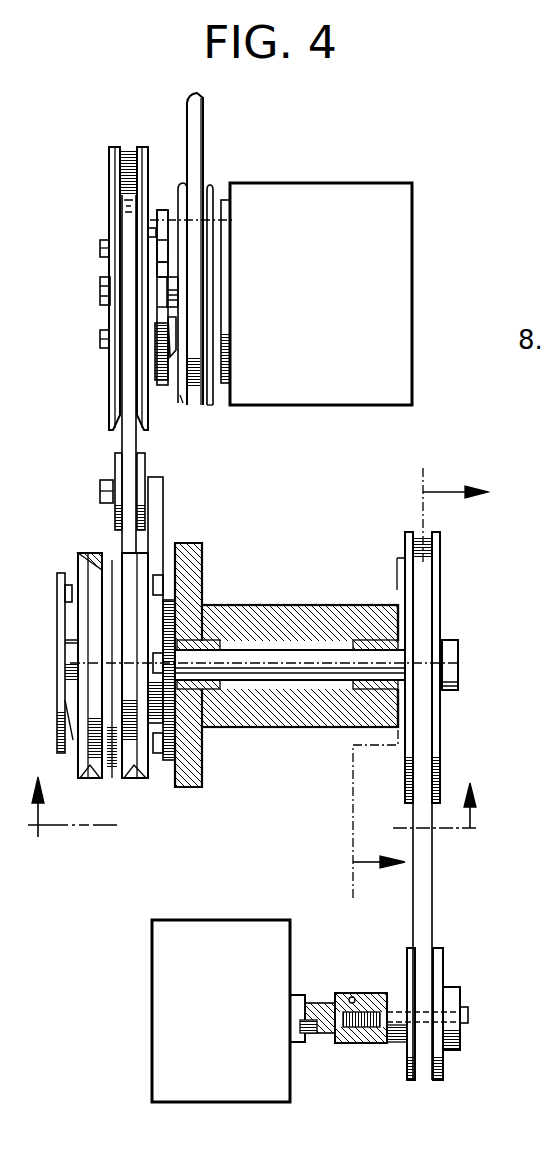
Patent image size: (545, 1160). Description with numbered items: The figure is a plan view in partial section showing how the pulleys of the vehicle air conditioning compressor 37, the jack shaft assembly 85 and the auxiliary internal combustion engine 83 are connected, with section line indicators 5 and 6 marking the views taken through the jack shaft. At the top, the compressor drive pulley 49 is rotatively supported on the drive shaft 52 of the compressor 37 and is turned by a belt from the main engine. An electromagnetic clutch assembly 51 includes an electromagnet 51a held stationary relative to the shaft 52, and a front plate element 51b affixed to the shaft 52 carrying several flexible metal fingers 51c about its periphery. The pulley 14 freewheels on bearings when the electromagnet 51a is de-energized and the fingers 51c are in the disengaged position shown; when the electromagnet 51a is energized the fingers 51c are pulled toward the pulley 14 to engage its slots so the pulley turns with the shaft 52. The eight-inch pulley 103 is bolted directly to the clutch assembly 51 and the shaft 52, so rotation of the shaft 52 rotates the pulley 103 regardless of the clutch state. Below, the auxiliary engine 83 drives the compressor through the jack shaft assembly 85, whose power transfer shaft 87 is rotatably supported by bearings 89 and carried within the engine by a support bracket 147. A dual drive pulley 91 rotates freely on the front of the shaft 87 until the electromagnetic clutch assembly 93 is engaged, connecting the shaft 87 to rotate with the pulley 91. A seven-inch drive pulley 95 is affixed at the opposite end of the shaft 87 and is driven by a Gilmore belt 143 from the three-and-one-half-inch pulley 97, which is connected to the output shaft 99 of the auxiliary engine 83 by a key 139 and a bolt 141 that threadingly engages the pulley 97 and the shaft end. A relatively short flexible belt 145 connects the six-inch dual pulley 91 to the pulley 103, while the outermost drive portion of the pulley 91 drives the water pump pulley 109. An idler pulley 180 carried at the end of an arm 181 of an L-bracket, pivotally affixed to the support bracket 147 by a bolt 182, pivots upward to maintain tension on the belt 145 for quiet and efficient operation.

The pulley 103 is at (109, 160).
The electromagnetic clutch assembly 51 is at (165, 206).
The electromagnet 51a is at (228, 212).
The front plate element 51b is at (160, 268).
The flexible metal fingers 51c is at (168, 243).
The drive shaft 52 is at (100, 290).
The compressor drive pulley 49 is at (212, 218).
The pulley 14 is at (212, 405).
The air conditioning compressor 37 is at (393, 232).
The pulley of the water pump 109 is at (544, 409).
The flexible belt 145 is at (130, 443).
The idler pulley 180 is at (146, 460).
The bolt 182 is at (100, 490).
The arm 181 is at (158, 513).
The dual drive pulley 91 is at (110, 553).
The electromagnetic clutch assembly 93 is at (60, 573).
The support bracket 147 is at (198, 552).
The jack shaft assembly 85 is at (300, 604).
The bearings 89 is at (203, 645).
The power transfer shaft 87 is at (303, 667).
The drive pulley 95 is at (440, 583).
The Gilmore belt 143 is at (416, 905).
The auxiliary internal combustion engine 83 is at (214, 920).
The output shaft 99 is at (310, 1033).
The key 139 is at (355, 997).
The pulley 97 is at (445, 955).
The bolt 141 is at (470, 1015).
The section line 5- 5 is at (257, 826).
The section line 6- 6 is at (403, 684).